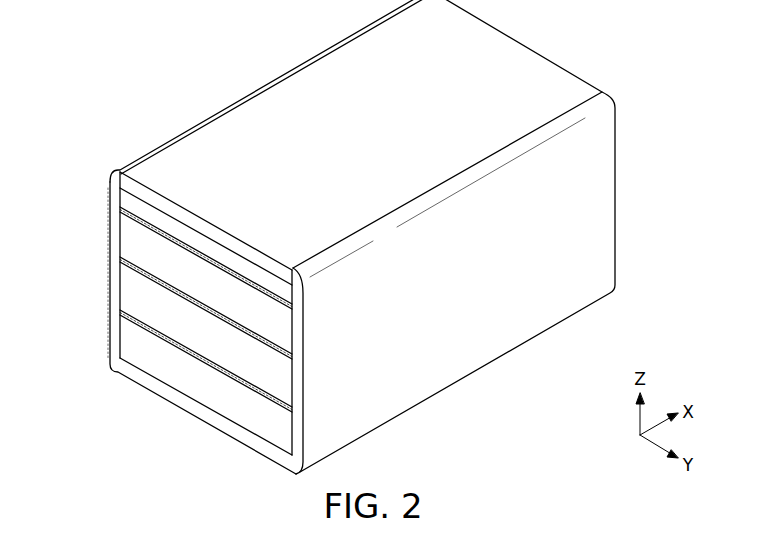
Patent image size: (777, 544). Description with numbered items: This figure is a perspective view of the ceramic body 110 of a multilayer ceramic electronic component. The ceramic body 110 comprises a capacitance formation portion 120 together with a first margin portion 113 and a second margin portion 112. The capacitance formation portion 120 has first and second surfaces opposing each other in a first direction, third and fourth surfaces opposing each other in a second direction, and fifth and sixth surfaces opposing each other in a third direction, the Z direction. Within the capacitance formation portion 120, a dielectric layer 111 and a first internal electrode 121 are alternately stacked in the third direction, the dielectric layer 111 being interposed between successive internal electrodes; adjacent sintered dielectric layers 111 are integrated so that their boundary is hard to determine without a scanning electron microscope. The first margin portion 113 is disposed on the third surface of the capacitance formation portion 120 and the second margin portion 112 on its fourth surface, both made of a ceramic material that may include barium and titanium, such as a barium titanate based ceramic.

The ceramic body 110 is at (159, 30).
The dielectric layer 111 is at (140, 252).
The second margin portion 112 is at (116, 330).
The first margin portion 113 is at (602, 205).
The capacitance formation portion 120 is at (199, 371).
The first internal electrode 121 is at (143, 232).